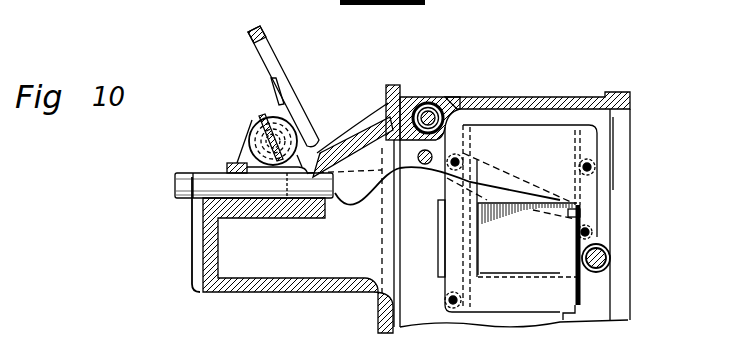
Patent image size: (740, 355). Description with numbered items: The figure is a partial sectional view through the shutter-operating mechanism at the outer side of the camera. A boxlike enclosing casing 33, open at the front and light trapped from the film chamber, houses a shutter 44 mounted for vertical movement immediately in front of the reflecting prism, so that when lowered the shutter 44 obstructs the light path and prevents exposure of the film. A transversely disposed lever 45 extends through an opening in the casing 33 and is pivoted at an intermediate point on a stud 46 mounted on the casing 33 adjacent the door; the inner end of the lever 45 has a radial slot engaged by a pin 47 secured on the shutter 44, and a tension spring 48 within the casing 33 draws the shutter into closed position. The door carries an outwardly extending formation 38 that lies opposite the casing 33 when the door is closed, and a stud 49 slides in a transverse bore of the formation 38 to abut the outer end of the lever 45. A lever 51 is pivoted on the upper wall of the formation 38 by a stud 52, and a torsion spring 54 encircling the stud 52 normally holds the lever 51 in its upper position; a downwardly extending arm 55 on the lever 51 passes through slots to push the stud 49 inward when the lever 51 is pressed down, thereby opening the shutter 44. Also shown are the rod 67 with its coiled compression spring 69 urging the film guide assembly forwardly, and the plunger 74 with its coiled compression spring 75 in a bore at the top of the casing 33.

The casing 33 is at (553, 97).
The formation 38 is at (258, 293).
The shutter 44 is at (533, 258).
The lever 45 is at (370, 190).
The stud 46 is at (440, 155).
The pin 47 is at (580, 213).
The tension spring 48 is at (583, 304).
The stud 49 is at (175, 183).
The lever 51 is at (275, 58).
The stud 52 is at (262, 157).
The torsion spring 54 is at (272, 96).
The arm 55 is at (246, 156).
The rod 67 is at (609, 261).
The coiled compression spring 69 is at (607, 248).
The plunger 74 is at (417, 99).
The coiled compression spring 75 is at (440, 106).